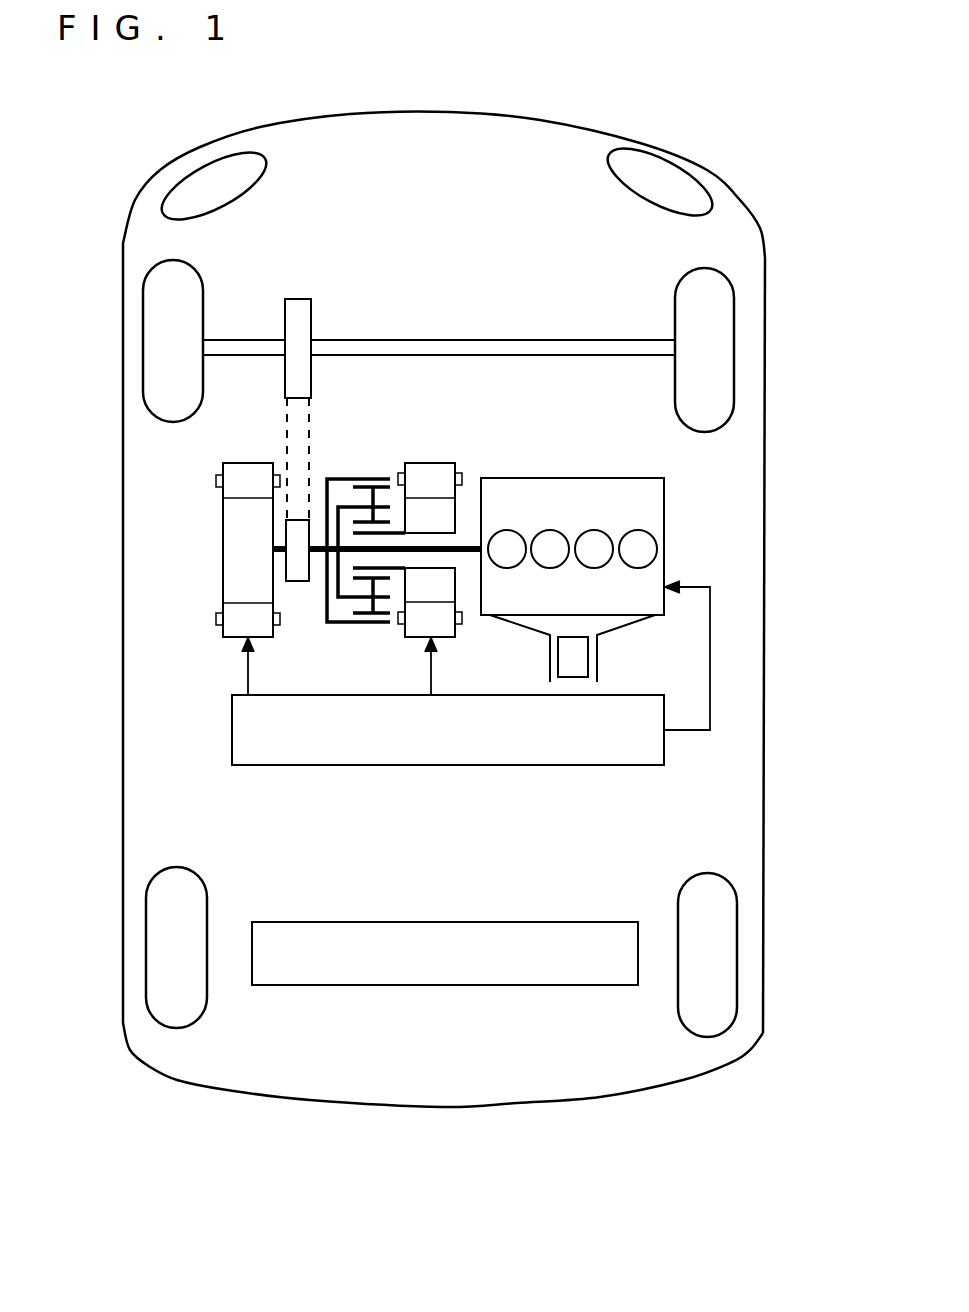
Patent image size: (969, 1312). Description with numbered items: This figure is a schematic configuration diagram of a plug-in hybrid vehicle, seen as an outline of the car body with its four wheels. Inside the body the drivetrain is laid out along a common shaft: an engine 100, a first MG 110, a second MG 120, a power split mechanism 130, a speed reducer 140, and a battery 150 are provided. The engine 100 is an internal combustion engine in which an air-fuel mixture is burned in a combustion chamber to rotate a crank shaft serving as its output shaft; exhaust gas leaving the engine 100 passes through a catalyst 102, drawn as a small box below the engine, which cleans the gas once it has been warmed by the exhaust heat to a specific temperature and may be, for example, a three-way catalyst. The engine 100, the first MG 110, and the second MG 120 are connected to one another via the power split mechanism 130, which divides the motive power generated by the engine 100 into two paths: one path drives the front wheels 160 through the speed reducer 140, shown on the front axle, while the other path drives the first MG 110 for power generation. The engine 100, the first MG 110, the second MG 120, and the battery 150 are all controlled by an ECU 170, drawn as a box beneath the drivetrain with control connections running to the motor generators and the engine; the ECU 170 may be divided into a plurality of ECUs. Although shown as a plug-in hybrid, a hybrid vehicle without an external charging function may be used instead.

The engine 100 is at (518, 478).
The catalyst 102 is at (588, 659).
The first MG 110 is at (433, 463).
The second MG 120 is at (223, 549).
The power split mechanism 130 is at (361, 479).
The speed reducer 140 is at (298, 280).
The battery 150 is at (403, 987).
The front wheels 160 is at (143, 353).
The ECU 170 is at (232, 737).